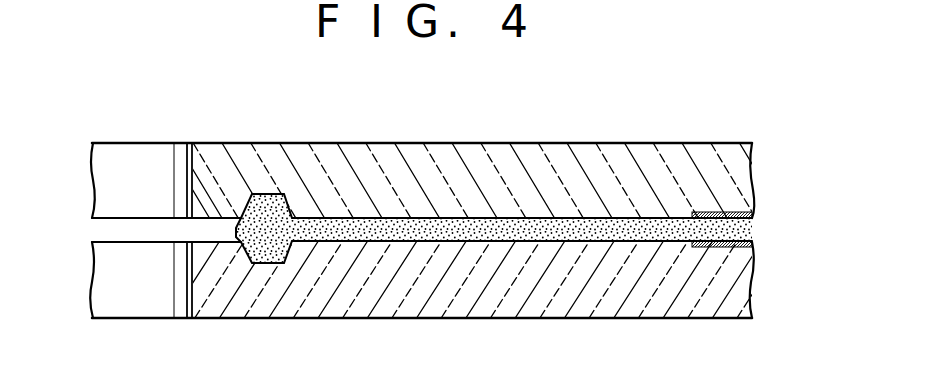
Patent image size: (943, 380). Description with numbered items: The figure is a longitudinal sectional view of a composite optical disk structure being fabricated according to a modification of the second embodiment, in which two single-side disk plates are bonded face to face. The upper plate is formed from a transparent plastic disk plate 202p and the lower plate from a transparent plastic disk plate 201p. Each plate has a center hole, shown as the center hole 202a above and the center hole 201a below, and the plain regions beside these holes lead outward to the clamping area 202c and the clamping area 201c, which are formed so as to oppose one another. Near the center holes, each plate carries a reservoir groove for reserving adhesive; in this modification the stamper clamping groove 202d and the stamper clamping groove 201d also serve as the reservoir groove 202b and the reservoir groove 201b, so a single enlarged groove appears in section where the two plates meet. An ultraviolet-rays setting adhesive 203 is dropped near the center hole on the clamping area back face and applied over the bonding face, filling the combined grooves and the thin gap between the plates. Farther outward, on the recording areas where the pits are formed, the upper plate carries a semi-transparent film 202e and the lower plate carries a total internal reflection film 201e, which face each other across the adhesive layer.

The center hole 202a is at (191, 167).
The center hole 201a is at (182, 289).
The reservoir groove 202b is at (496, 153).
The stamper clamping groove 202d is at (276, 194).
The reservoir groove 201b is at (494, 298).
The stamper clamping groove 201d is at (276, 263).
The ultraviolet-rays setting adhesive 203 is at (274, 231).
The clamping area 202c is at (437, 143).
The clamping area 201c is at (427, 318).
The transparent plastic disk plate 202p is at (597, 181).
The transparent plastic disk plate 201p is at (510, 288).
The semi-transparent film 202e is at (736, 226).
The total internal reflection film 201e is at (733, 240).